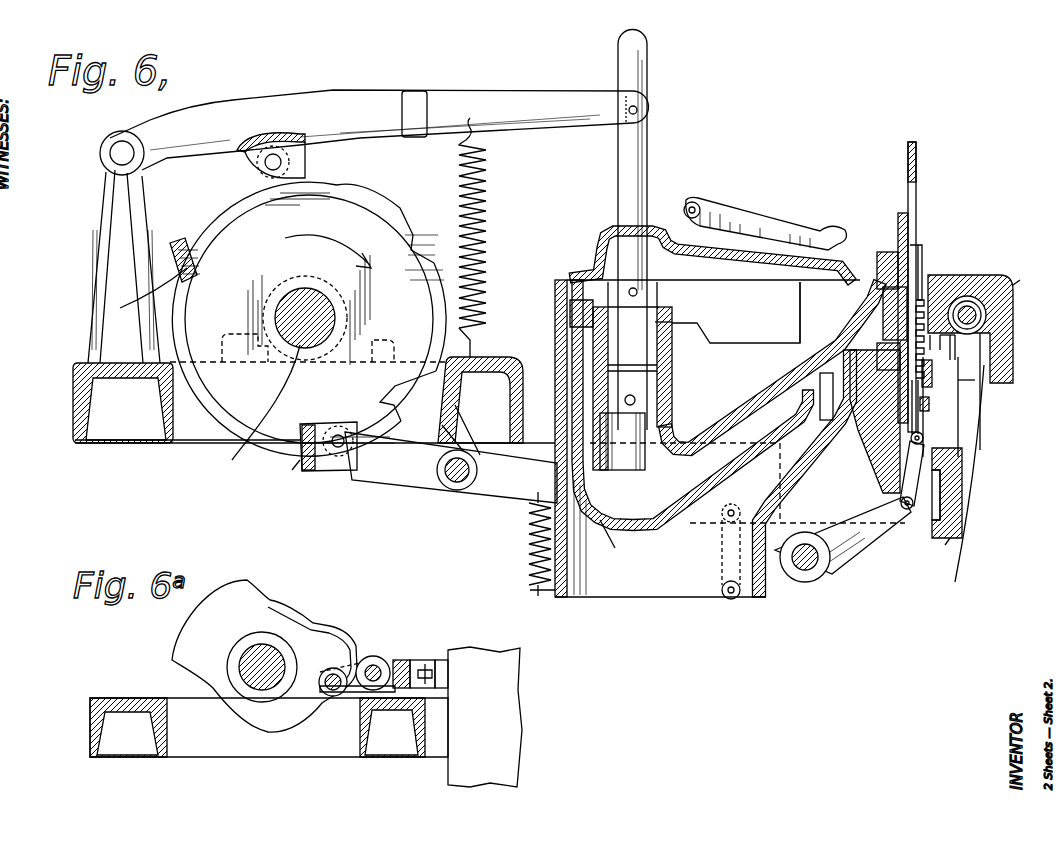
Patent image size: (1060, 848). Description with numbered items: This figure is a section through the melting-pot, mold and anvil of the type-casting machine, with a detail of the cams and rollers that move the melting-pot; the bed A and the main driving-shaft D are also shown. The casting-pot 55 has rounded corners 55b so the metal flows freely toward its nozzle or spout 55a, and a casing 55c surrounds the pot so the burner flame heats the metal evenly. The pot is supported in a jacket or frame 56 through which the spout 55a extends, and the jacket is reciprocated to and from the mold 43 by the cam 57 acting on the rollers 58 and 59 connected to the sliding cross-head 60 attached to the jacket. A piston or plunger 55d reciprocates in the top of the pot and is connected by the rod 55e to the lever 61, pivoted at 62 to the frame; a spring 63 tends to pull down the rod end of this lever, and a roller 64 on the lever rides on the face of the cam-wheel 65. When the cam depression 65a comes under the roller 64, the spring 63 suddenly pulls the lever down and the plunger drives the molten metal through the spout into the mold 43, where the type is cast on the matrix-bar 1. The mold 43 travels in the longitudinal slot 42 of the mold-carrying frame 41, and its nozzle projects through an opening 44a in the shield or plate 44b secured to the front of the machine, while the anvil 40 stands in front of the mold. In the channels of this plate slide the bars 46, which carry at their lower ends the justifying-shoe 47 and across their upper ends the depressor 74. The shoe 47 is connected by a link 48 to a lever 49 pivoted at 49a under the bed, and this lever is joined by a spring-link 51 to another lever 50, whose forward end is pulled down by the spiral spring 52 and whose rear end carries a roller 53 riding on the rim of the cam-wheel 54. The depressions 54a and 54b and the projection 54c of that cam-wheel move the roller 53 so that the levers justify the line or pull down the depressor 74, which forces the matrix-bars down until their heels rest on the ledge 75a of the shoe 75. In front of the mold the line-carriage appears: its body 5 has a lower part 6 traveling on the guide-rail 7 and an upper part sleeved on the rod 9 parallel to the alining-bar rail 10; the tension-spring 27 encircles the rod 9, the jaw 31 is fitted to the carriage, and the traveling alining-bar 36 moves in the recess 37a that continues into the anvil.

In FIG. 6, the matrix-bar 1 is at (948, 340).
In FIG. 6, the carriage body 5 is at (978, 440).
In FIG. 6, the lower part of the carriage 6 is at (942, 552).
In FIG. 6, the guide-rail 7 is at (962, 510).
In FIG. 6, the guide rod 9 is at (988, 315).
In FIG. 6, the alining-bar rail 10 is at (958, 360).
In FIG. 6, the tension-spring 27 is at (1031, 272).
In FIG. 6, the jaw 31 is at (940, 345).
In FIG. 6, the traveling alining-bar 36 is at (885, 250).
In FIG. 6, the recess 37a is at (925, 290).
In FIG. 6, the anvil 40 is at (985, 272).
In FIG. 6, the mold-carrying frame 41 is at (773, 226).
In FIG. 6, the longitudinal slot 42 is at (883, 300).
In FIG. 6, the mold 43 is at (877, 356).
In FIG. 6, the opening 44a is at (898, 230).
In FIG. 6, the shield 44b is at (905, 460).
In FIG. 6, the slide-bars 46 is at (907, 175).
In FIG. 6, the justifying-shoe 47 is at (923, 438).
In FIG. 6, the link 48 is at (910, 505).
In FIG. 6, the lever 49 is at (845, 562).
In FIG. 6, the pivot 49a is at (805, 560).
In FIG. 6, the lever 50 is at (451, 467).
In FIG. 6, the spring-link 51 is at (728, 540).
In FIG. 6, the spiral spring 52 is at (527, 560).
In FIG. 6, the roller 53 is at (335, 462).
In FIG. 6, the cam-wheel 54 is at (307, 319).
In FIG. 6, the cam depression 54a is at (300, 462).
In FIG. 6, the cam depression 54b is at (451, 409).
In FIG. 6, the cam projection 54c is at (398, 215).
In FIG. 6, the casting-pot 55 is at (675, 405).
In FIG. 6, the nozzle 55a is at (817, 300).
In FIG. 6, the rounded corners 55b is at (624, 441).
In FIG. 6, the casing 55c is at (616, 540).
In FIG. 6, the plunger 55d is at (655, 325).
In FIG. 6, the rod 55e is at (672, 158).
In FIG. 6, the jacket 56 is at (555, 310).
In FIG. 6A, the jacket 56 is at (465, 717).
In FIG. 6A, the cam 57 is at (300, 620).
In FIG. 6A, the roller 58 is at (383, 655).
In FIG. 6A, the roller 59 is at (335, 668).
In FIG. 6A, the sliding cross-head 60 is at (415, 655).
In FIG. 6, the lever 61 is at (379, 130).
In FIG. 6, the pivot 62 is at (118, 158).
In FIG. 6, the spring 63 is at (488, 245).
In FIG. 6, the roller 64 is at (262, 170).
In FIG. 6, the cam-wheel 65 is at (222, 215).
In FIG. 6, the cam depression 65a is at (147, 284).
In FIG. 6, the depressor 74 is at (916, 170).
In FIG. 6, the shoe 75 is at (932, 378).
In FIG. 6, the ledge 75a is at (929, 404).
In FIG. 6, the bed A is at (133, 428).
In FIG. 6, the main driving-shaft D is at (259, 416).